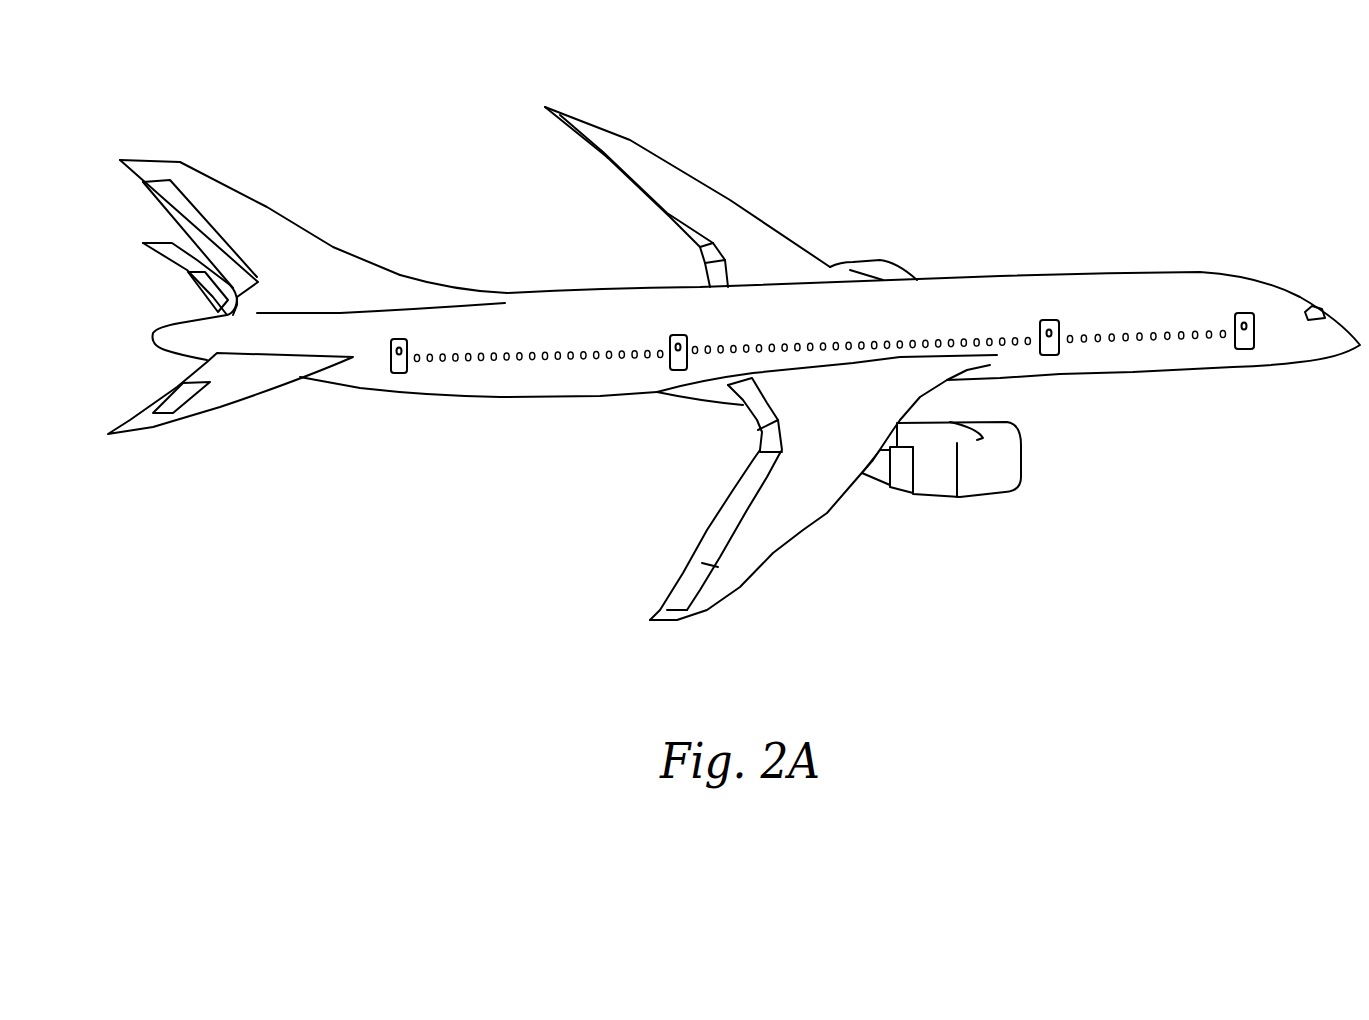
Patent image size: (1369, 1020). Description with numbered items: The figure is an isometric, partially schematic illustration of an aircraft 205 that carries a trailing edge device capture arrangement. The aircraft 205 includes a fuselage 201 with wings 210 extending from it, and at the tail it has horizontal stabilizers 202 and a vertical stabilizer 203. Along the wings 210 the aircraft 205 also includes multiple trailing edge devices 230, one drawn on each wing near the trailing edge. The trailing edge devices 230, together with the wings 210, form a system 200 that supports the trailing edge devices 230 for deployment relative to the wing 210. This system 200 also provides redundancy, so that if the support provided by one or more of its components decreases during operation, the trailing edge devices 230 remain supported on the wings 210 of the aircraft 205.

The system 200 is at (696, 358).
The fuselage 201 is at (1217, 283).
The horizontal stabilizers 202 is at (170, 257).
The vertical stabilizer 203 is at (247, 208).
The aircraft 205 is at (1163, 504).
The wings 210 is at (612, 146).
The trailing edge devices 230 is at (703, 253).